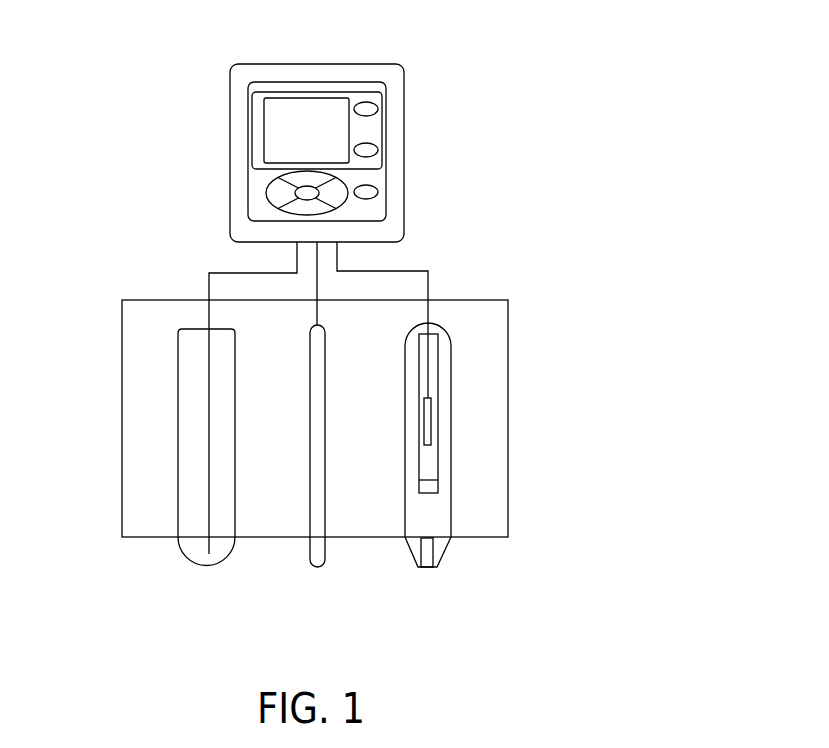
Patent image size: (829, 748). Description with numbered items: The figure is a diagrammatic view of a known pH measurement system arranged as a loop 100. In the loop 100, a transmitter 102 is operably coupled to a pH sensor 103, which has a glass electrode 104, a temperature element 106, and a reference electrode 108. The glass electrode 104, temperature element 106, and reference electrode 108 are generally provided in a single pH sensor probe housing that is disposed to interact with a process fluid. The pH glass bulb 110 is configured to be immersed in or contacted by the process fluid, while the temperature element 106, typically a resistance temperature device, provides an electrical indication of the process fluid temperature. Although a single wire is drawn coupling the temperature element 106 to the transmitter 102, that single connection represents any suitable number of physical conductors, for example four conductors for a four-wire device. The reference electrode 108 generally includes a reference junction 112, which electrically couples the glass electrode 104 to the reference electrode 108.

The loop 100 is at (580, 73).
The transmitter 102 is at (404, 86).
The pH sensor 103 is at (508, 461).
The glass electrode 104 is at (152, 488).
The temperature element 106 is at (310, 539).
The reference electrode 108 is at (462, 381).
The pH glass bulb 110 is at (203, 566).
The reference junction 112 is at (433, 567).